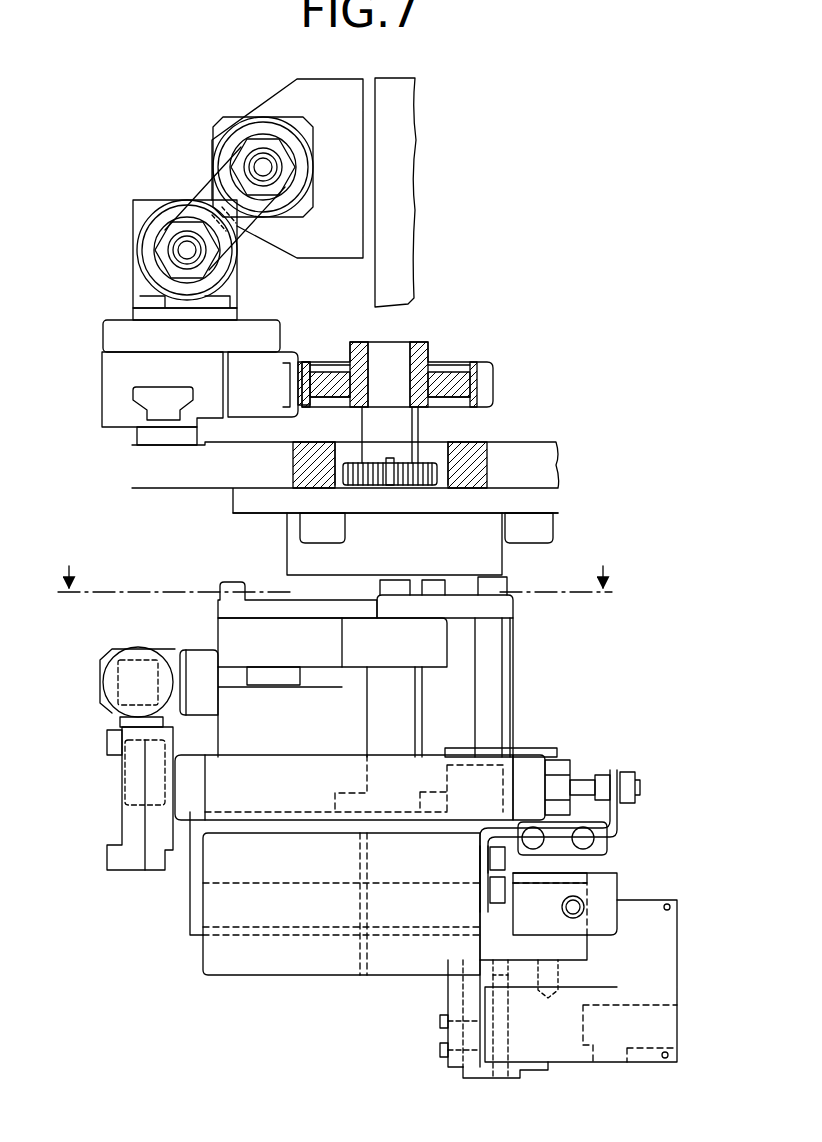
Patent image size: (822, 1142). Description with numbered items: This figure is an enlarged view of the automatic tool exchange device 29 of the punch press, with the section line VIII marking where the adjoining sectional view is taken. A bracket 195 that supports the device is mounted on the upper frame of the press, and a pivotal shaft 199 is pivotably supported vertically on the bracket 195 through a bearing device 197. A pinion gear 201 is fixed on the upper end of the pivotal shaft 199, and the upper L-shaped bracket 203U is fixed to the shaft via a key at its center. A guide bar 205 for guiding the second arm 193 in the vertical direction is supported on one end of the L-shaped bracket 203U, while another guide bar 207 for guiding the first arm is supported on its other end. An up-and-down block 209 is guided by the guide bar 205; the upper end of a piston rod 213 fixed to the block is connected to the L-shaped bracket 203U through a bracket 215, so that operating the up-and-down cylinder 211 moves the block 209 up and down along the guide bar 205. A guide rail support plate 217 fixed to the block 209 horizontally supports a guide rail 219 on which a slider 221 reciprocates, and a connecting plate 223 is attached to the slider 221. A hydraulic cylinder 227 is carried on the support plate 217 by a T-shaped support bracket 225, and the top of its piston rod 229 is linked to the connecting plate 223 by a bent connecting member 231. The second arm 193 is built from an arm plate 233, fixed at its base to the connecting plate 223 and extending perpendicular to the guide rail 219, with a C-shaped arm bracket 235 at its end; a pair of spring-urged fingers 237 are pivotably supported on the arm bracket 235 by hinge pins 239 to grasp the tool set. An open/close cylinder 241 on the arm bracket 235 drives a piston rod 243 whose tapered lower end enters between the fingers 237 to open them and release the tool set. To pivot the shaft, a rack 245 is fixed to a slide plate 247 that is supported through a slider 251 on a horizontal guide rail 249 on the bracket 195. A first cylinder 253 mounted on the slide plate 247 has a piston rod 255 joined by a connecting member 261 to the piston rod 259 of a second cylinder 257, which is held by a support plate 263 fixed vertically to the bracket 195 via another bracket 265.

The automatic tool exchange device 29 is at (552, 716).
The second arm 193 is at (593, 1072).
The bracket 195 is at (548, 453).
The bearing device 197 is at (394, 544).
The pivotal shaft 199 is at (405, 427).
The pinion gear 201 is at (446, 362).
The upper L-shaped bracket 203U is at (229, 640).
The guide bar 205 is at (394, 712).
The guide bar 207 is at (300, 700).
The up-and-down block 209 is at (352, 790).
The up-and-down cylinder 211 is at (455, 750).
The piston rod 213 is at (507, 670).
The bracket 215 is at (506, 614).
The guide rail support plate 217 is at (200, 870).
The guide rail 219 is at (607, 896).
The slider 221 is at (370, 978).
The connecting plate 223 is at (110, 795).
The T-shaped support bracket 225 is at (595, 845).
The hydraulic cylinder 227 is at (128, 655).
The piston rod 229 is at (573, 773).
The connecting member 231 is at (106, 723).
The arm plate 233 is at (456, 1062).
The C-shaped arm bracket 235 is at (500, 1080).
The fingers 237 is at (667, 1033).
The hinge pins 239 is at (508, 1052).
The open/close cylinder 241 is at (578, 950).
The piston rod 243 is at (560, 977).
The rack 245 is at (270, 360).
The slide plate 247 is at (103, 336).
The guide rail 249 is at (155, 405).
The slider 251 is at (102, 373).
The first cylinder 253 is at (158, 212).
The piston rod 255 is at (178, 250).
The second cylinder 257 is at (270, 124).
The piston rod 259 is at (270, 167).
The connecting member 261 is at (213, 196).
The support plate 263 is at (406, 95).
The bracket 265 is at (352, 92).
The section line VIII is at (337, 567).